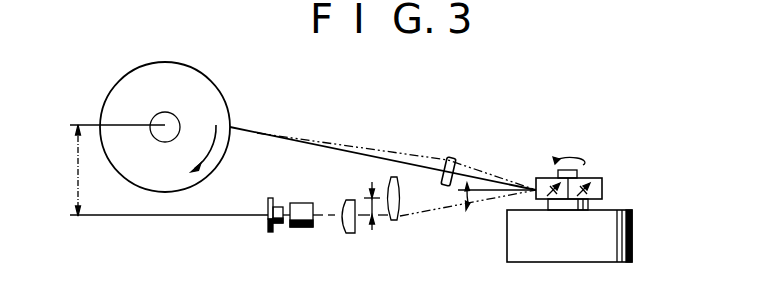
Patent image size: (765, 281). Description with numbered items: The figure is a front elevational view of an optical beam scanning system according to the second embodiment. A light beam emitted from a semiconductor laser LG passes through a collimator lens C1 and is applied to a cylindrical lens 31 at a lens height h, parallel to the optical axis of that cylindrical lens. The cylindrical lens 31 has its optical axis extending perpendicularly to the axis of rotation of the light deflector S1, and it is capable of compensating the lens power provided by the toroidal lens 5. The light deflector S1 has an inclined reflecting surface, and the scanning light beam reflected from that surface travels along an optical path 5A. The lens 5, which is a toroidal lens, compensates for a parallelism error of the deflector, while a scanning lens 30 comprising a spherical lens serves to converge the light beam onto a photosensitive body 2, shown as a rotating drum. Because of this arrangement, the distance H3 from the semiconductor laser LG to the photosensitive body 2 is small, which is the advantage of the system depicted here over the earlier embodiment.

The photosensitive body 2 is at (222, 160).
The lens for compensating for a parallelism error 5 is at (454, 160).
The optical path 5A is at (411, 153).
The scanning lens 30 is at (349, 200).
The cylindrical lens 31 is at (399, 187).
The collimator lens C1 is at (304, 204).
The semiconductor laser LG is at (268, 223).
The light deflector S1 is at (633, 192).
The distance from the semiconductor laser to the photosensitive body H3 is at (78, 177).
The lens height h is at (378, 217).